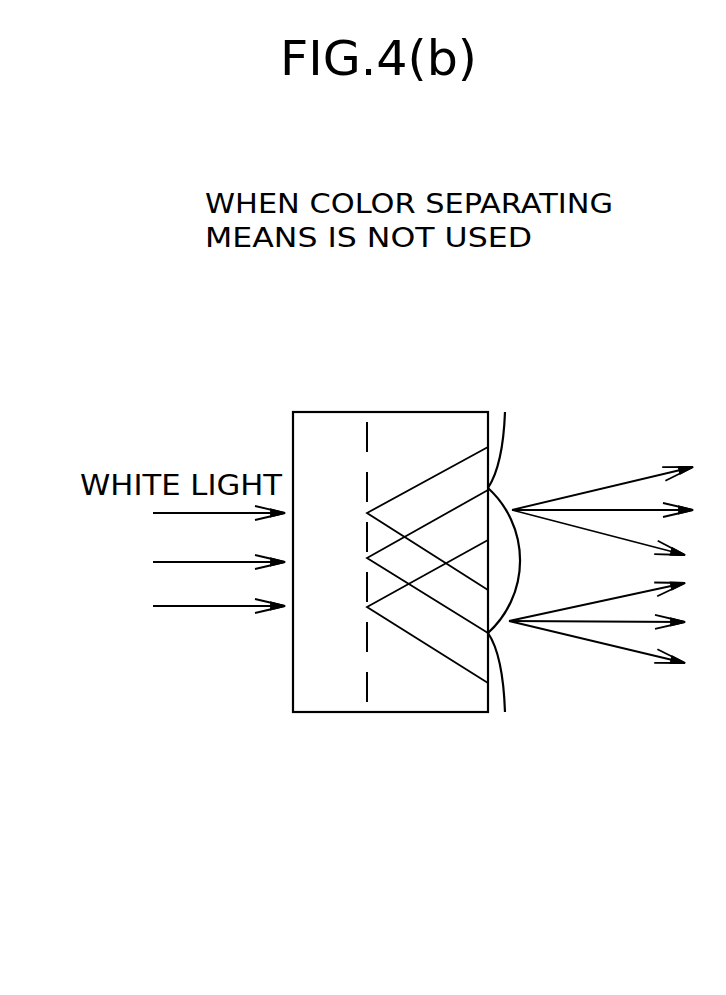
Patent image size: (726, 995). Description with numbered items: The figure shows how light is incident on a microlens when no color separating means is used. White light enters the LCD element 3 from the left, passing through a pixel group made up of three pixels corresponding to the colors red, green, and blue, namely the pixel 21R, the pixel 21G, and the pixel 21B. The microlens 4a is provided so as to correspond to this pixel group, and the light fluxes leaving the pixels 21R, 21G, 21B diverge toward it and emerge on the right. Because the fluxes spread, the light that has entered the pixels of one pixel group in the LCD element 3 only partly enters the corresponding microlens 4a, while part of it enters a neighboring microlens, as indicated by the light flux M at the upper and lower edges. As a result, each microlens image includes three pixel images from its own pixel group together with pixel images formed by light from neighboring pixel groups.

The LCD element 3 is at (355, 411).
The pixel corresponding to color R 21R is at (396, 518).
The pixel corresponding to color G 21G is at (396, 561).
The pixel corresponding to color B 21B is at (396, 611).
The microlens 4a is at (501, 573).
The light flux entering a neighboring microlens M is at (507, 447).